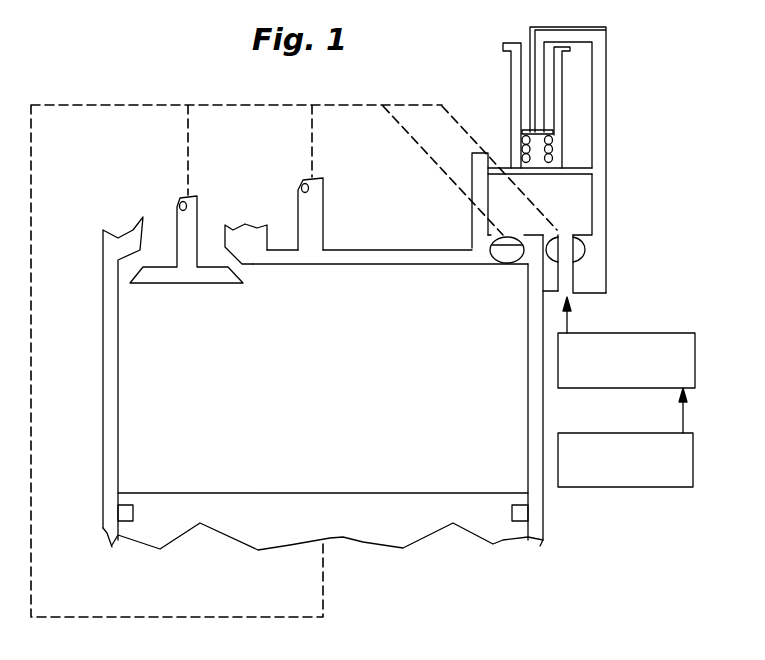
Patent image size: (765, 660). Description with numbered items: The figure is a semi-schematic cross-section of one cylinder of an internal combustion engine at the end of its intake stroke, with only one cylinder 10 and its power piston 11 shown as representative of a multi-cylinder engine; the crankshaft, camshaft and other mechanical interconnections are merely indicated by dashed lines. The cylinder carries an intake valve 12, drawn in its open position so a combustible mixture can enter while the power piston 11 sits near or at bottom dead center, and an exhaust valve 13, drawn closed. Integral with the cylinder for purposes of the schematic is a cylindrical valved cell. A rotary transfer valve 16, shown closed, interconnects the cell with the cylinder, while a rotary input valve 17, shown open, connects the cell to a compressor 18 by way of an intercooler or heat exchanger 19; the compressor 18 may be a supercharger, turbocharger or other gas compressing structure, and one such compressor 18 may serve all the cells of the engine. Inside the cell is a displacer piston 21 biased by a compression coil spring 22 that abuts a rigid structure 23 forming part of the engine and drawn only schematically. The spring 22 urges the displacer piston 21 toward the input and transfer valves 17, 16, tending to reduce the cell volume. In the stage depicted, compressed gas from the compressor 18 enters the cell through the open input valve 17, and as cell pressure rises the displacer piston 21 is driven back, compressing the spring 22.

The cylinder 10 is at (110, 427).
The power piston 11 is at (168, 517).
The intake valve 12 is at (188, 245).
The exhaust valve 13 is at (298, 205).
The transfer valve 16 is at (505, 265).
The input valve 17 is at (580, 243).
The compressor 18 is at (647, 481).
The intercooler or heat exchanger 19 is at (663, 333).
The displacer piston 21 is at (590, 186).
The compression coil spring 22 is at (552, 137).
The rigid structure 23 is at (538, 68).